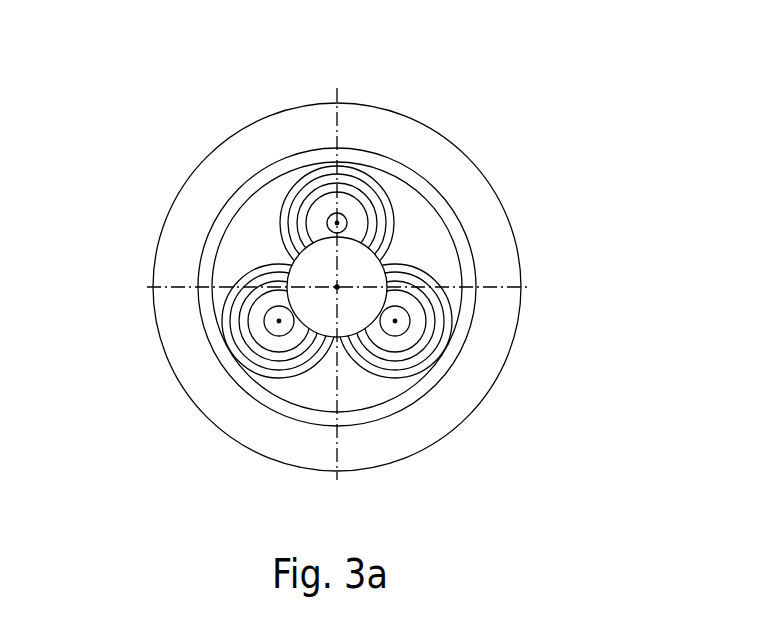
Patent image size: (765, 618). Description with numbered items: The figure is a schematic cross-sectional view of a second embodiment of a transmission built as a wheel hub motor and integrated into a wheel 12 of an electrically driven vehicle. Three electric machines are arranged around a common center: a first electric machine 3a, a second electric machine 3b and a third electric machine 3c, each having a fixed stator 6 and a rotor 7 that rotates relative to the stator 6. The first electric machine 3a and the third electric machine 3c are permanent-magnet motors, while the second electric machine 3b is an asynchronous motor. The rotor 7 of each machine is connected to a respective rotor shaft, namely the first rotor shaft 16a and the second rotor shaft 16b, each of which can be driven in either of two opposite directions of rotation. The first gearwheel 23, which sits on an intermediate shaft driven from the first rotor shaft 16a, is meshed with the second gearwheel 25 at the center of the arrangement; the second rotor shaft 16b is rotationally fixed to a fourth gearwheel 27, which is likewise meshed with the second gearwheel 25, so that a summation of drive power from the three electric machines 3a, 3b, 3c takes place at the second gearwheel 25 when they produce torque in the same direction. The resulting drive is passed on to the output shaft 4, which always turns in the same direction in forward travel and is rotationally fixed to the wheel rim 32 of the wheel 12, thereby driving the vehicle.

The wheel 12 is at (556, 156).
The wheel rim 32 is at (250, 188).
The first electric machine 3a is at (276, 386).
The second electric machine 3b is at (403, 207).
The third electric machine 3c is at (442, 272).
The output shaft 4 is at (337, 287).
The second gearwheel 25 is at (287, 263).
The first gearwheel 23 is at (253, 305).
The rotor 7 is at (307, 193).
The stator 6 is at (377, 190).
The first rotor shaft 16a is at (279, 321).
The second rotor shaft 16b is at (332, 215).
The fourth gearwheel 27 is at (342, 215).